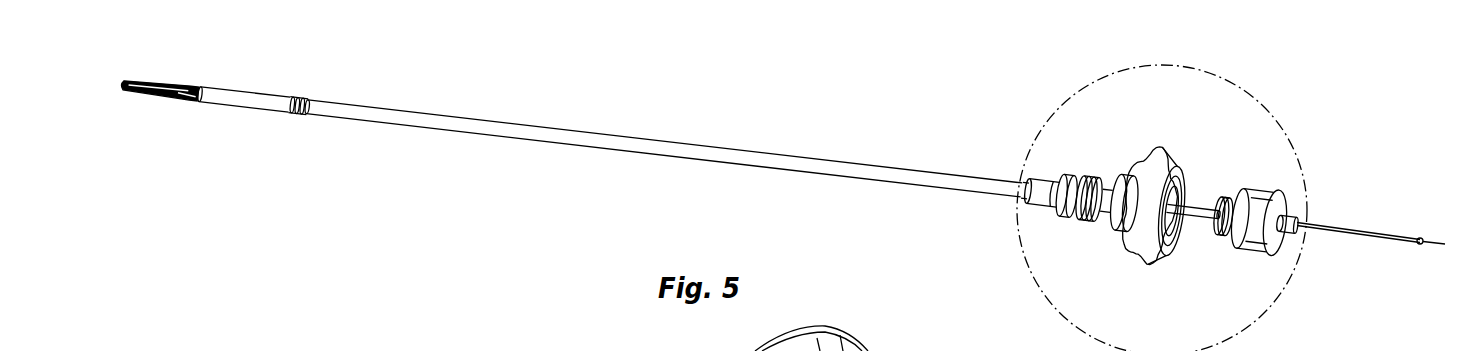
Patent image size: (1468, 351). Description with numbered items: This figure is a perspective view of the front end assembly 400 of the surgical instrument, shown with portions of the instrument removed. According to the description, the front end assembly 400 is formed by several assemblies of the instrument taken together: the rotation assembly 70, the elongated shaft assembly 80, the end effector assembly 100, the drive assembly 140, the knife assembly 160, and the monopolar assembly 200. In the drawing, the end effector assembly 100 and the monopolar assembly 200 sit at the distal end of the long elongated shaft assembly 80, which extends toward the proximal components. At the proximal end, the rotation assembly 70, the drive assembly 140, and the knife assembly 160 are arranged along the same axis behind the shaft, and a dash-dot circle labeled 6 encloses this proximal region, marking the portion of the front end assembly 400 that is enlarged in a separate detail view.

The end effector assembly 100 is at (117, 63).
The monopolar assembly 200 is at (264, 85).
The elongated shaft assembly 80 is at (413, 119).
The front end assembly 400 is at (626, 121).
The detail view circle 6 is at (1263, 110).
The rotation assembly 70 is at (1162, 145).
The knife assembly 160 is at (1201, 230).
The drive assembly 140 is at (1257, 250).